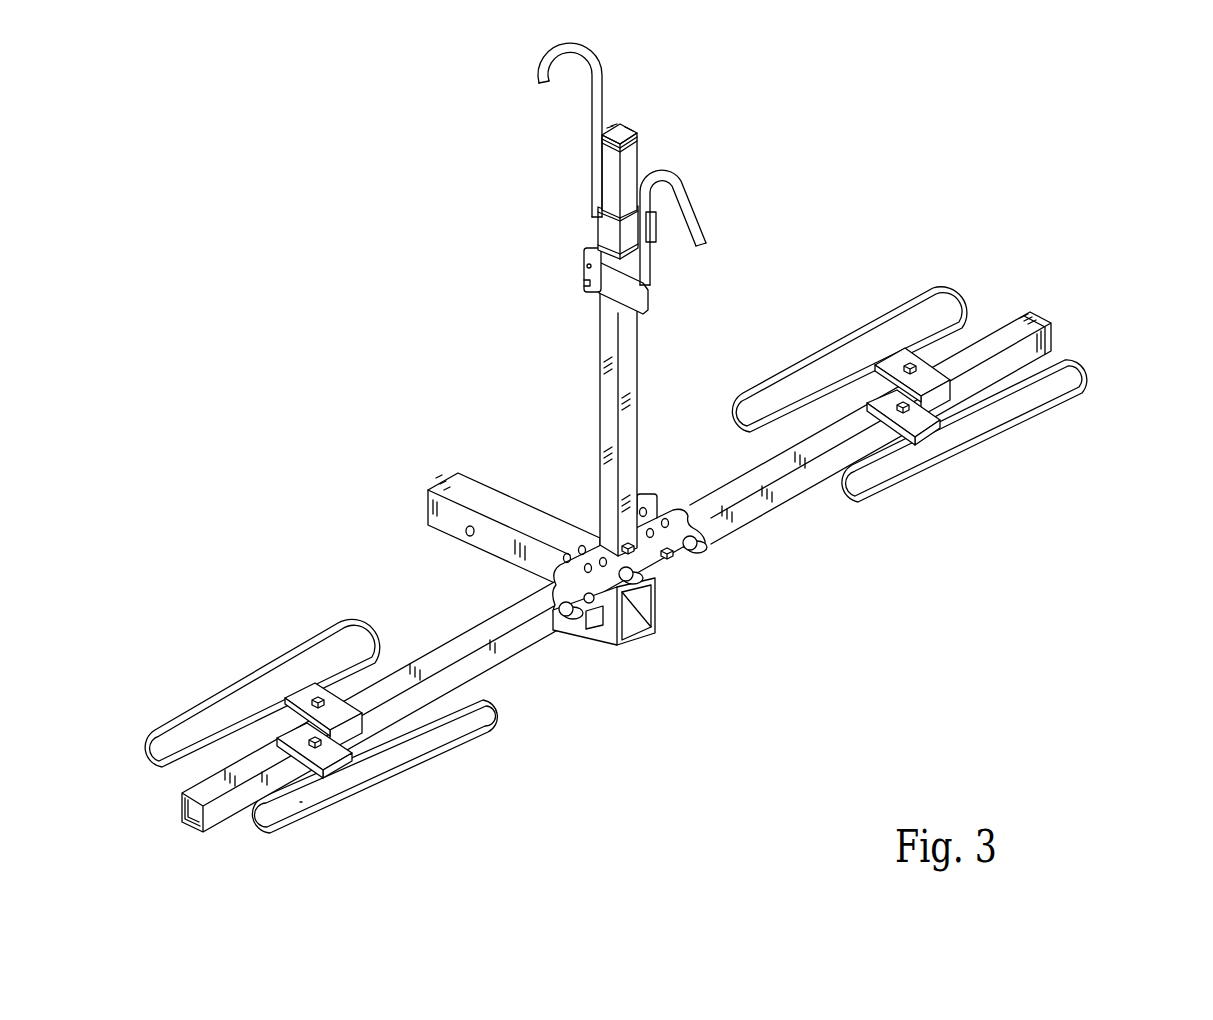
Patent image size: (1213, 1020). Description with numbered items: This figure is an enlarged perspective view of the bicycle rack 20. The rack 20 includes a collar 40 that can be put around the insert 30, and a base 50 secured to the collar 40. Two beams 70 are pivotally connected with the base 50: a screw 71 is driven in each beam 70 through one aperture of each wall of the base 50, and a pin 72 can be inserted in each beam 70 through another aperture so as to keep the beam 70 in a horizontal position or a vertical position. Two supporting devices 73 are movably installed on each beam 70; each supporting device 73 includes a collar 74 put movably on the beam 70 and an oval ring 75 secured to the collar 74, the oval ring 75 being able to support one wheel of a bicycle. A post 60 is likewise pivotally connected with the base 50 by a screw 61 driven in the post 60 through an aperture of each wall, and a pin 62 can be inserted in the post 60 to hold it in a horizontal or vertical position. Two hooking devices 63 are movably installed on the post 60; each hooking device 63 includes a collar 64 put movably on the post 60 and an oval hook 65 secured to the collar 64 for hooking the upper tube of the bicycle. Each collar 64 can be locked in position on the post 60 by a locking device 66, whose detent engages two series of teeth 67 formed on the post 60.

The rack 20 is at (910, 256).
The insert 30 is at (440, 527).
The collar 40 is at (604, 646).
The base 50 is at (660, 580).
The post 60 is at (630, 147).
The screw 61 is at (628, 543).
The pin 62 is at (599, 530).
The hooking device 63 is at (622, 104).
The collar 64 is at (608, 226).
The hook 65 is at (588, 56).
The locking device 66 is at (585, 272).
The teeth 67 is at (638, 318).
The beam 70 is at (1048, 322).
The screw 71 is at (636, 632).
The pin 72 is at (563, 618).
The supporting device 73 is at (1018, 466).
The collar 74 is at (305, 733).
The oval ring 75 is at (331, 815).